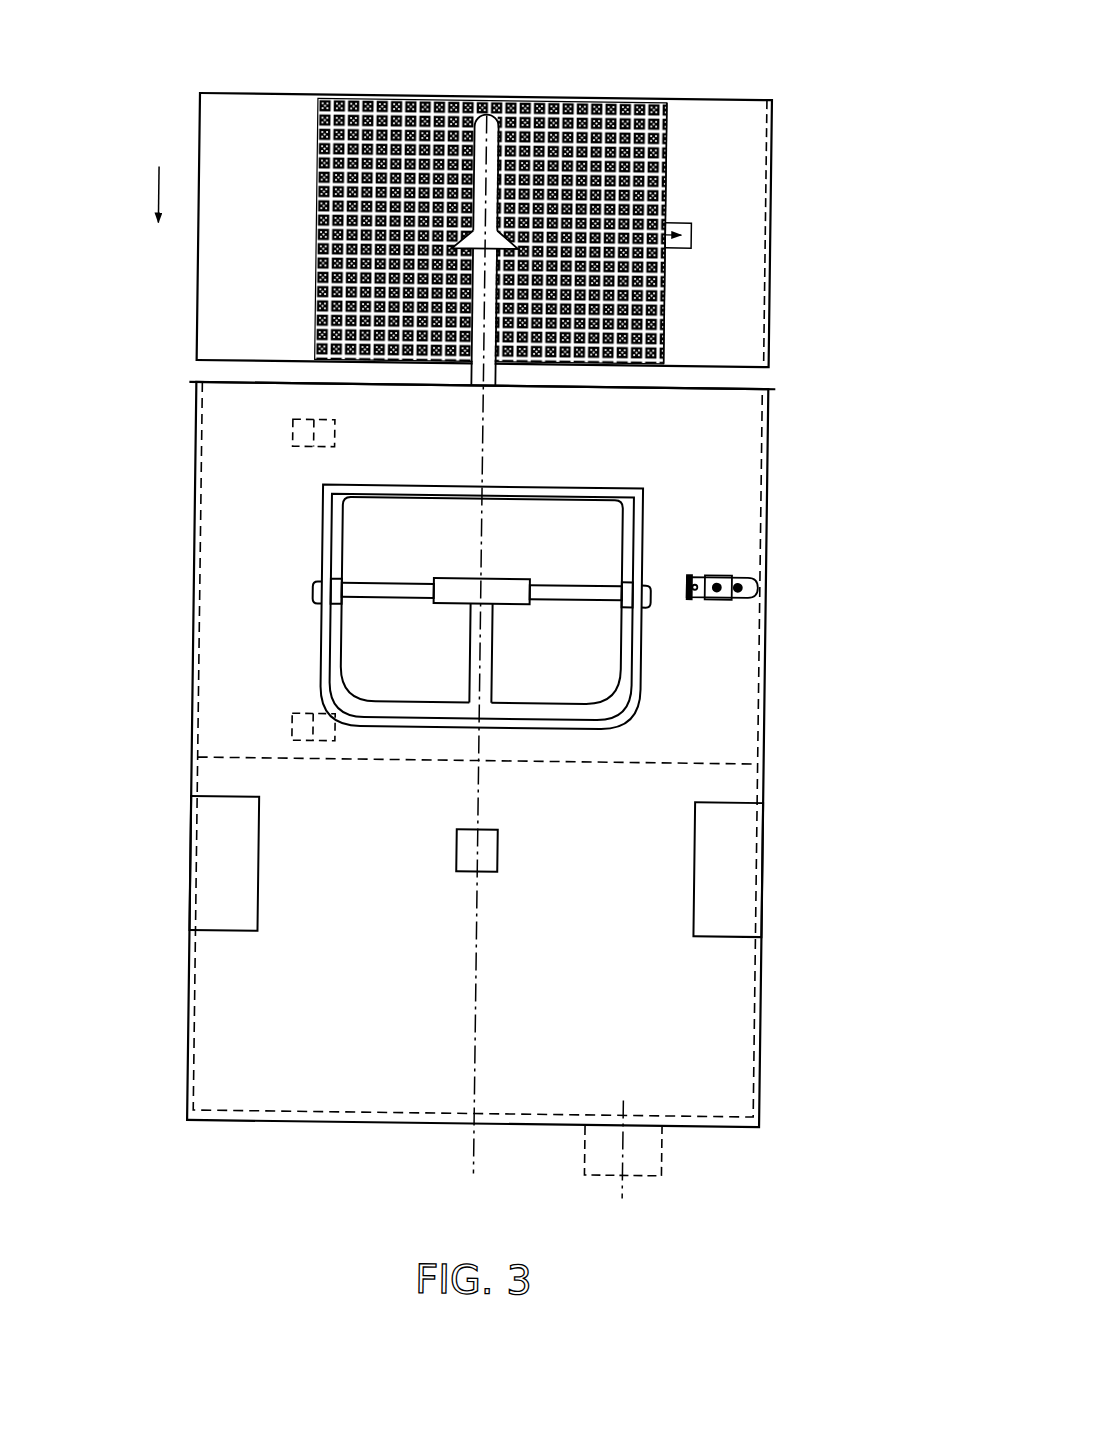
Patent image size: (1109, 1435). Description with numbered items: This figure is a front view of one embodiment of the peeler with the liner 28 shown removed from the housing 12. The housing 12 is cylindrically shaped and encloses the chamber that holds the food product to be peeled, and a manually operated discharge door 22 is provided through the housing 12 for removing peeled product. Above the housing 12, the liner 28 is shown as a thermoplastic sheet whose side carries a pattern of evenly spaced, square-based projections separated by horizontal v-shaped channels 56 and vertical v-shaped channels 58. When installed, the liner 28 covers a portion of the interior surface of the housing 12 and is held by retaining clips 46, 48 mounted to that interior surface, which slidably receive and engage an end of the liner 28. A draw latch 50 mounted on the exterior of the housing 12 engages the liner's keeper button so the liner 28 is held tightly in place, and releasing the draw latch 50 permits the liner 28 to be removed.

The housing 12 is at (778, 498).
The discharge door 22 is at (606, 649).
The liner 28 is at (714, 92).
The retaining clip 46 is at (306, 448).
The retaining clip 48 is at (300, 712).
The draw latch 50 is at (737, 569).
The horizontal v-shaped channel 56 is at (669, 112).
The vertical v-shaped channel 58 is at (514, 92).